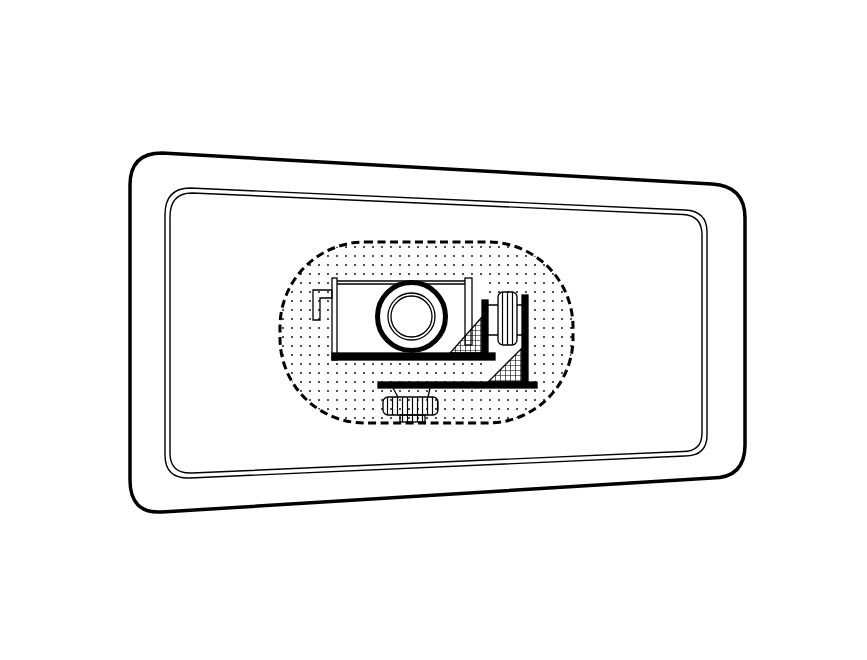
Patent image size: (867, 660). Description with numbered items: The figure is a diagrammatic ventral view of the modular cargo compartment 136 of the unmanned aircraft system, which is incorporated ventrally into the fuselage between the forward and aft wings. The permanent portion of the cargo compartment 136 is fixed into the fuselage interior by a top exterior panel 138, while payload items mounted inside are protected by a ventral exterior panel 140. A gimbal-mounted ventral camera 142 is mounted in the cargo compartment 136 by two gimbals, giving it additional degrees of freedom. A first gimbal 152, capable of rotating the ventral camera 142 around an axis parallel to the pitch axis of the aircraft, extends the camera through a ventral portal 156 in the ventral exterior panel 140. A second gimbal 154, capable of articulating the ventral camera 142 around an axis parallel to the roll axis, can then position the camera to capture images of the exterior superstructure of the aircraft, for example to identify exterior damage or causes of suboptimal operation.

The modular cargo compartment 136 is at (100, 71).
The top exterior panel 138 is at (358, 265).
The ventral exterior panel 140 is at (655, 233).
The ventral camera 142 is at (355, 317).
The first gimbal 152 is at (412, 422).
The second gimbal 154 is at (507, 297).
The ventral portal 156 is at (548, 258).